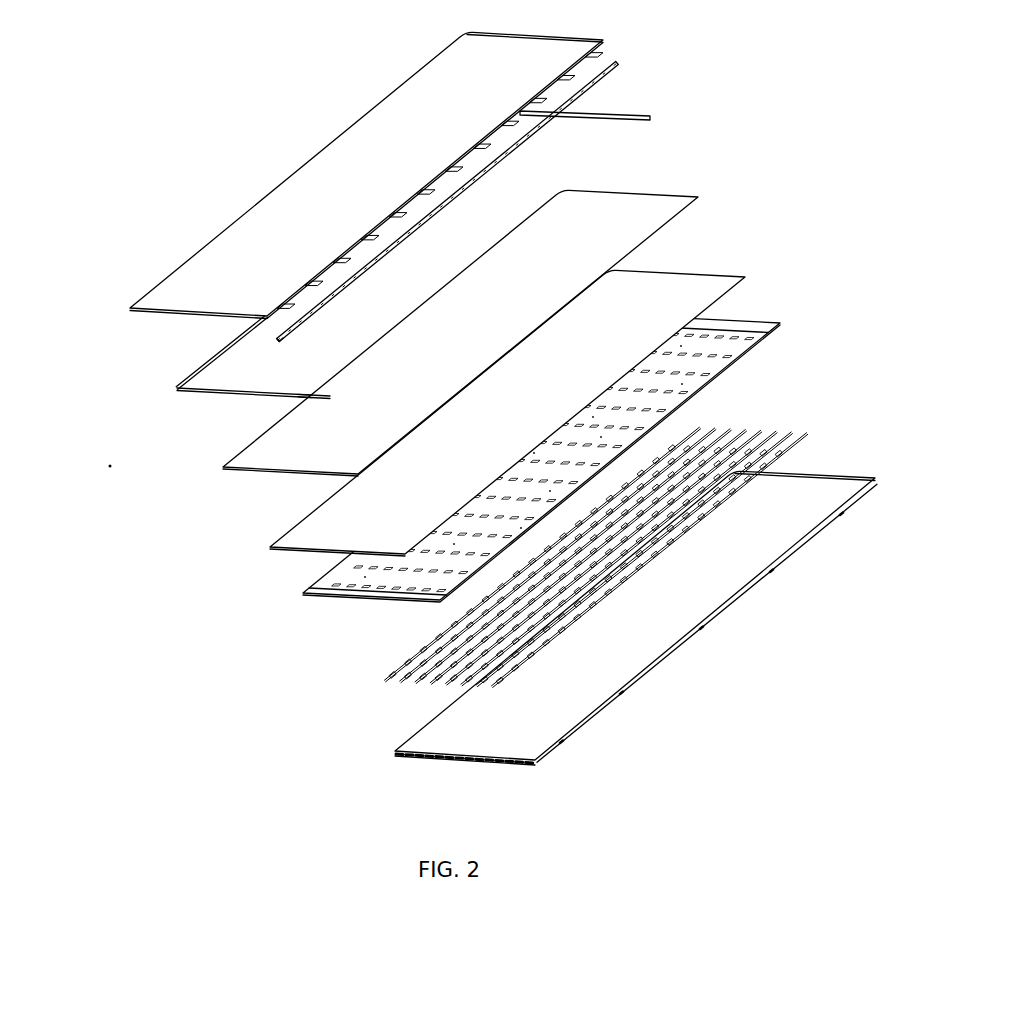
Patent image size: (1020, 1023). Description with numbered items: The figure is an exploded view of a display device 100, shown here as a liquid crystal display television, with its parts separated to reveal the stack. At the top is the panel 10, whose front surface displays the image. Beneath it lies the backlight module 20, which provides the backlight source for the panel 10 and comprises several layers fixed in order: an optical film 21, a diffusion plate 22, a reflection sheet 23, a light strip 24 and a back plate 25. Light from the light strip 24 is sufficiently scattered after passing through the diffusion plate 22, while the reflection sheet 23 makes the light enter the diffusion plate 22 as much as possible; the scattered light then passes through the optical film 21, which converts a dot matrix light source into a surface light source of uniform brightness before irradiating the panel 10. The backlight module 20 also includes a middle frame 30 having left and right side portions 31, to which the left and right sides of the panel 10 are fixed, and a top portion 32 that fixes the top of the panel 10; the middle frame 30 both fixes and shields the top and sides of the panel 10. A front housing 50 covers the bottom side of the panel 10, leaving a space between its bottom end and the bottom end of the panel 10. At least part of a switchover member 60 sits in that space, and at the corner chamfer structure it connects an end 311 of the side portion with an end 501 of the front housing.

The display device 100 is at (243, 159).
The panel 10 is at (147, 300).
The backlight module 20 is at (252, 606).
The optical film 21 is at (688, 200).
The diffusion plate 22 is at (722, 277).
The reflection sheet 23 is at (772, 327).
The light strip 24 is at (400, 682).
The back plate 25 is at (396, 751).
The middle frame 30 is at (243, 397).
The side portion 31 is at (253, 395).
The end of the side portion 311 is at (313, 396).
The top portion 32 is at (216, 350).
The front housing 50 is at (617, 67).
The end of the front housing 501 is at (287, 340).
The switchover member 60 is at (650, 120).